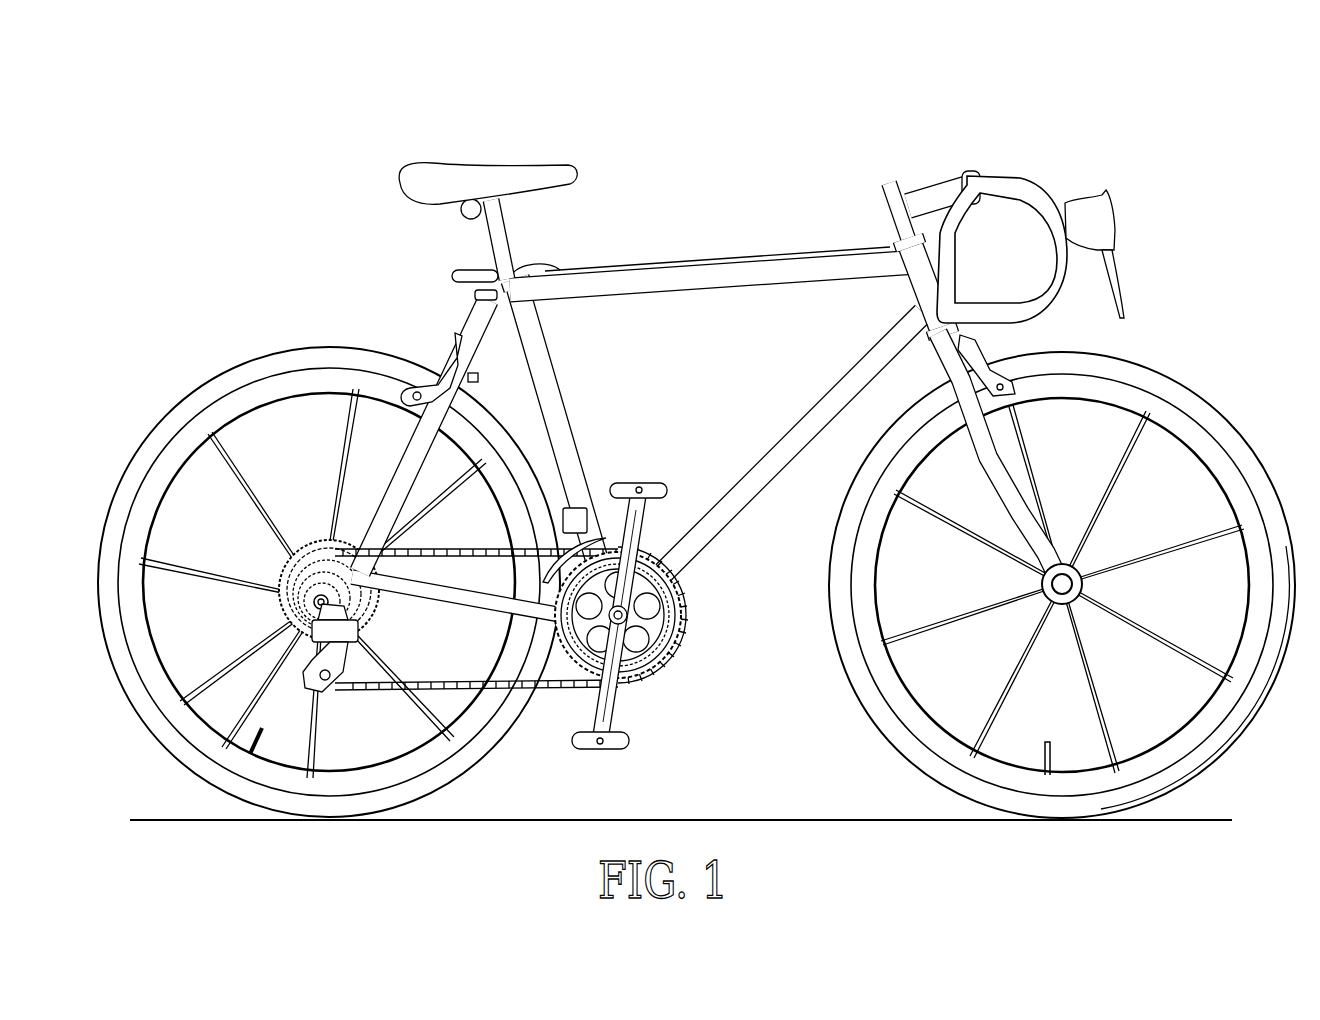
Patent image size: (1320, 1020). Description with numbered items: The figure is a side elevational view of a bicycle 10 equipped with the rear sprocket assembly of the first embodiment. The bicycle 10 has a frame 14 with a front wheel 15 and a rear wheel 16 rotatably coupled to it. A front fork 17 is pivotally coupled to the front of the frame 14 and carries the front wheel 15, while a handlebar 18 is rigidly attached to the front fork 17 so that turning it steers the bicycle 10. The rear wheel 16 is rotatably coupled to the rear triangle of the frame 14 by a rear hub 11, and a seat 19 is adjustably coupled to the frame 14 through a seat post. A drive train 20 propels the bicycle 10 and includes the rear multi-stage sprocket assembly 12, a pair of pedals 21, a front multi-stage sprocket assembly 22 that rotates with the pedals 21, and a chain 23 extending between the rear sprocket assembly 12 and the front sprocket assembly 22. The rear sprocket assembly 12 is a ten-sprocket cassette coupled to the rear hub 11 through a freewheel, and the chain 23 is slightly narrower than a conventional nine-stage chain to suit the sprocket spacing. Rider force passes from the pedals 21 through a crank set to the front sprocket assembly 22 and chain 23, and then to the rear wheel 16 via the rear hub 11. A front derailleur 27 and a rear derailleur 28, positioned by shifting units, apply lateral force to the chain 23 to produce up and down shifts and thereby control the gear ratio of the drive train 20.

The bicycle 10 is at (696, 433).
The rear bicycle hub 11 is at (303, 500).
The rear multi-stage sprocket assembly 12 is at (278, 553).
The frame 14 is at (671, 262).
The front wheel 15 is at (1198, 382).
The rear wheel 16 is at (207, 372).
The front fork 17 is at (993, 452).
The handlebar 18 is at (1025, 176).
The seat 19 is at (470, 160).
The drive train 20 is at (682, 508).
The pedals 21 is at (636, 483).
The front multi-stage sprocket assembly 22 is at (672, 656).
The chain 23 is at (548, 692).
The front derailleur 27 is at (562, 521).
The rear derailleur 28 is at (312, 646).